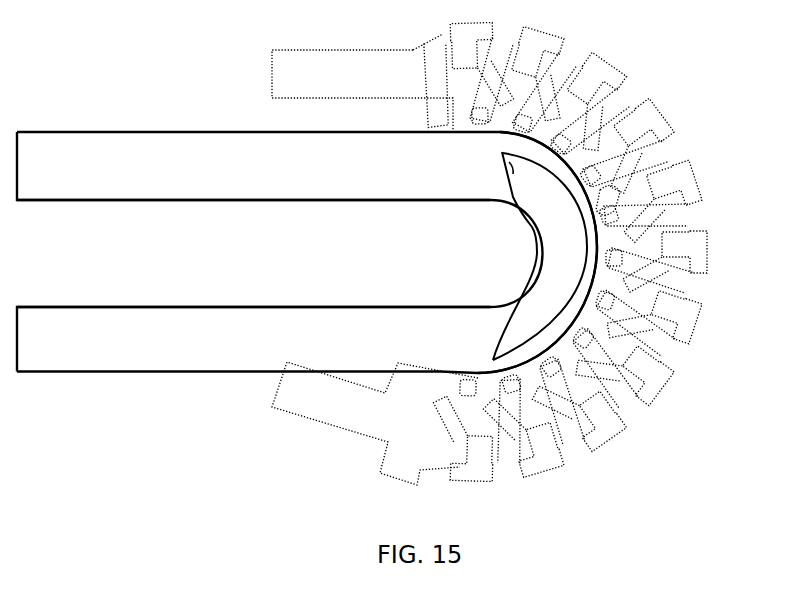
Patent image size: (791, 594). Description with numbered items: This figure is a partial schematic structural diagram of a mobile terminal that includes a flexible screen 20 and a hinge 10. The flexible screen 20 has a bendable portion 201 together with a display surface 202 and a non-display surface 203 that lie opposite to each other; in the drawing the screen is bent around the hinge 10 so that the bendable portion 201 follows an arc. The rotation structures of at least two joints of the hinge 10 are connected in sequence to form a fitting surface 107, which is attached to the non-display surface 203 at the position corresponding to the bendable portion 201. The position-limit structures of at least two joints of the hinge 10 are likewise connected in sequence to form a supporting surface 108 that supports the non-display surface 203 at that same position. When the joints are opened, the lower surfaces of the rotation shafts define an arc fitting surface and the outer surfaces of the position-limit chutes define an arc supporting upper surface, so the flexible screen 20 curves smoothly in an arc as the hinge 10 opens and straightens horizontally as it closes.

The hinge 10 is at (640, 88).
The flexible screen 20 is at (112, 43).
The bendable portion 201 is at (503, 153).
The display surface 202 is at (185, 200).
The non-display surface 203 is at (200, 132).
The fitting surface 107 is at (588, 202).
The supporting surface 108 is at (705, 262).